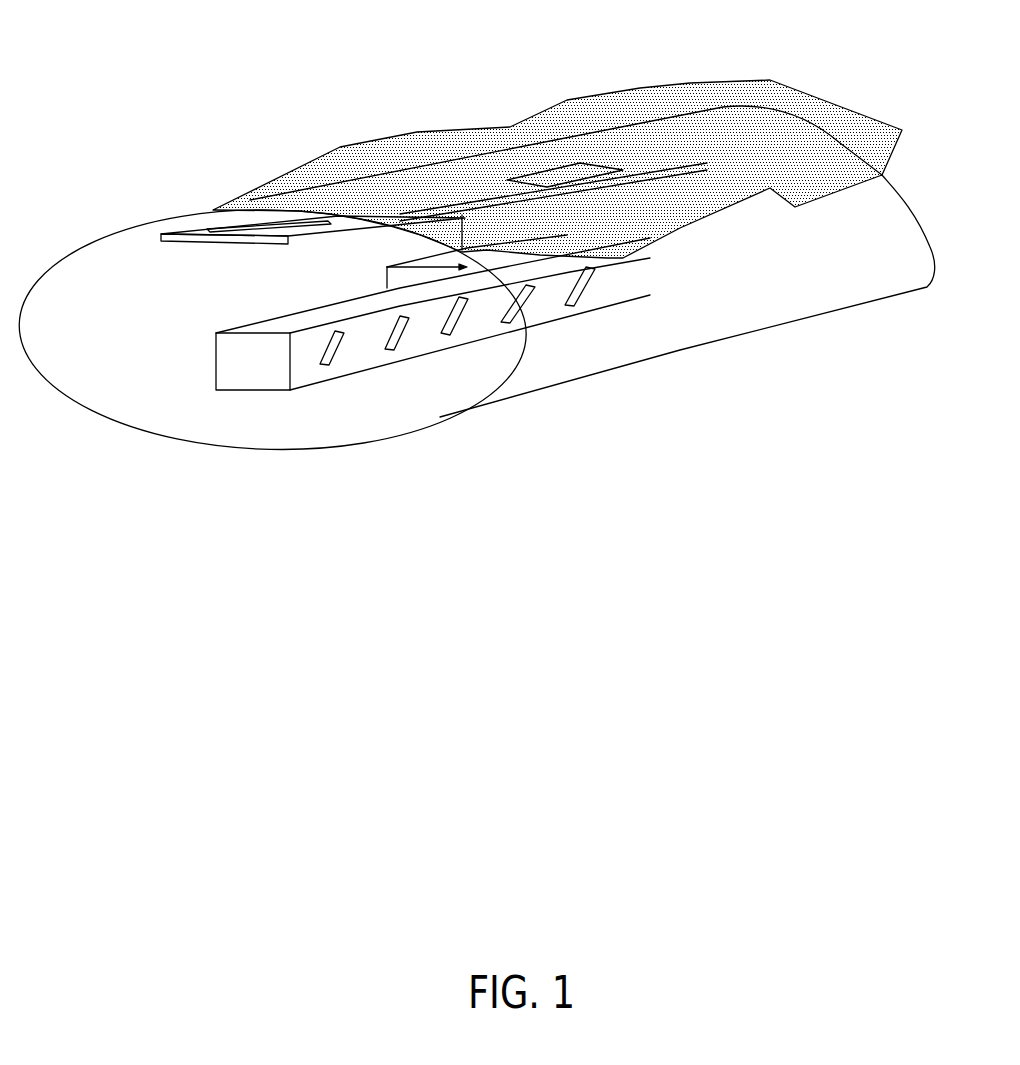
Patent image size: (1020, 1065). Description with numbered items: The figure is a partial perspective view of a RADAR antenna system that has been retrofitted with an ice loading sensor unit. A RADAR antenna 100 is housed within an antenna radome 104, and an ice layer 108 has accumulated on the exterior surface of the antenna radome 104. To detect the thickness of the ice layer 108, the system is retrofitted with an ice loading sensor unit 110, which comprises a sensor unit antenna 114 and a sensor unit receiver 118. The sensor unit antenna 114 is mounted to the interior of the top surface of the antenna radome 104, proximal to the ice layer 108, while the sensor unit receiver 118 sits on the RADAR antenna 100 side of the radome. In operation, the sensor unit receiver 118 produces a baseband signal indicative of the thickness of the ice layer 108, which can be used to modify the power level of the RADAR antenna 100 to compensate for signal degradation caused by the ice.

The RADAR antenna 100 is at (296, 356).
The antenna radome 104 is at (130, 222).
The ice layer 108 is at (500, 126).
The ice loading sensor unit 110 is at (337, 269).
The sensor unit antenna 114 is at (233, 252).
The sensor unit receiver 118 is at (376, 279).